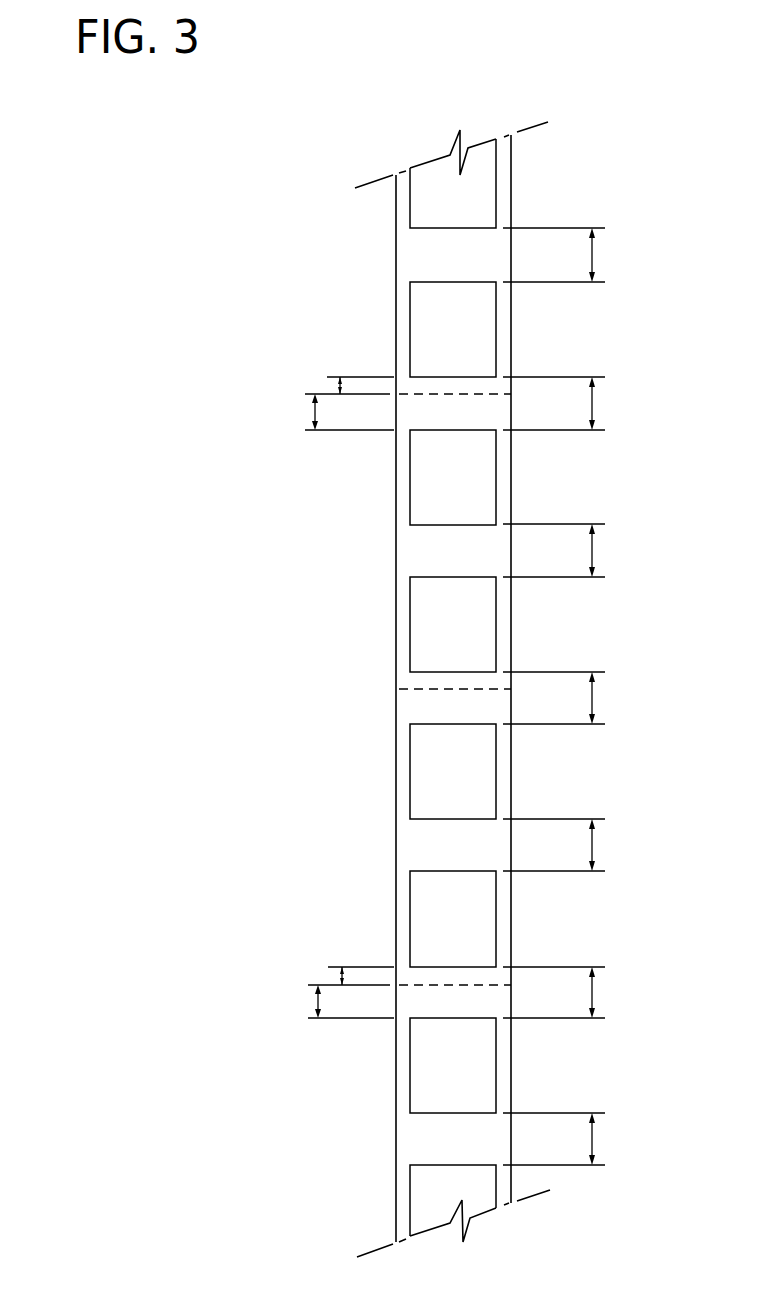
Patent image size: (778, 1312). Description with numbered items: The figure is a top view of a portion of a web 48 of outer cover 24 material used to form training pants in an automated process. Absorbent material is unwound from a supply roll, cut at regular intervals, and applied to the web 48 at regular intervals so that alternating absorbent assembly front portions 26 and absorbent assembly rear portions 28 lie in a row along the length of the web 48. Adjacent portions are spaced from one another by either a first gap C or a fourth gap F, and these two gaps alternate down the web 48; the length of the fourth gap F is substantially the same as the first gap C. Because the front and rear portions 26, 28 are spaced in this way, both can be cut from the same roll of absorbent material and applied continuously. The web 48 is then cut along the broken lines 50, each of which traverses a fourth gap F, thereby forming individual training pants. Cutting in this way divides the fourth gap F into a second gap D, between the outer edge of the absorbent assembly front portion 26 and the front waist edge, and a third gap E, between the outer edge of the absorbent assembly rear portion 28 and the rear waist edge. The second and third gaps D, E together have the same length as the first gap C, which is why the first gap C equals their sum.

The outer cover 24 is at (415, 552).
The absorbent assembly front portion 26 is at (487, 327).
The absorbent assembly rear portion 28 is at (418, 208).
The web 48 is at (513, 472).
The broken lines 50 is at (409, 395).
The first gap C is at (593, 253).
The second gap D is at (337, 384).
The third gap E is at (314, 411).
The fourth gap F is at (593, 403).